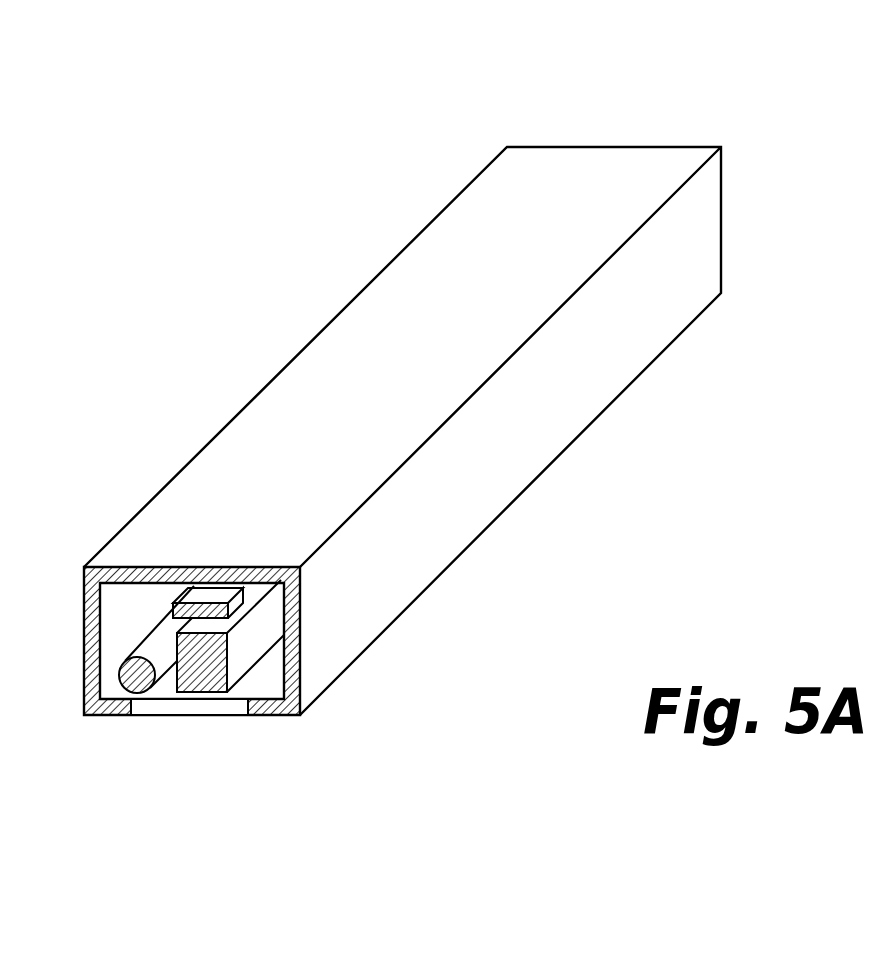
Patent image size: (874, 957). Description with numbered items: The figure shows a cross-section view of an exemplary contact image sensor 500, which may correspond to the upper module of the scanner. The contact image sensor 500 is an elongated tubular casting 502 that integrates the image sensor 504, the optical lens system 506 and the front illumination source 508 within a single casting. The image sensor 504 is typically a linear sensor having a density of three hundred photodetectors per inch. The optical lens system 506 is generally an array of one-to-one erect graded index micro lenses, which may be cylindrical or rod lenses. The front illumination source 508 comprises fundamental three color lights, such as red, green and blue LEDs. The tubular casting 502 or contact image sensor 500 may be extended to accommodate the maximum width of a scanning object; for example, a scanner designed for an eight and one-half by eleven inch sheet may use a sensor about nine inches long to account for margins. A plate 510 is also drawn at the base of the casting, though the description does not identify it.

The contact image sensor 500 is at (612, 107).
The tubular casting 502 is at (498, 476).
The image sensor 504 is at (215, 595).
The optical lens system 506 is at (267, 626).
The front illumination source 508 is at (161, 668).
The base plate 510 is at (215, 712).